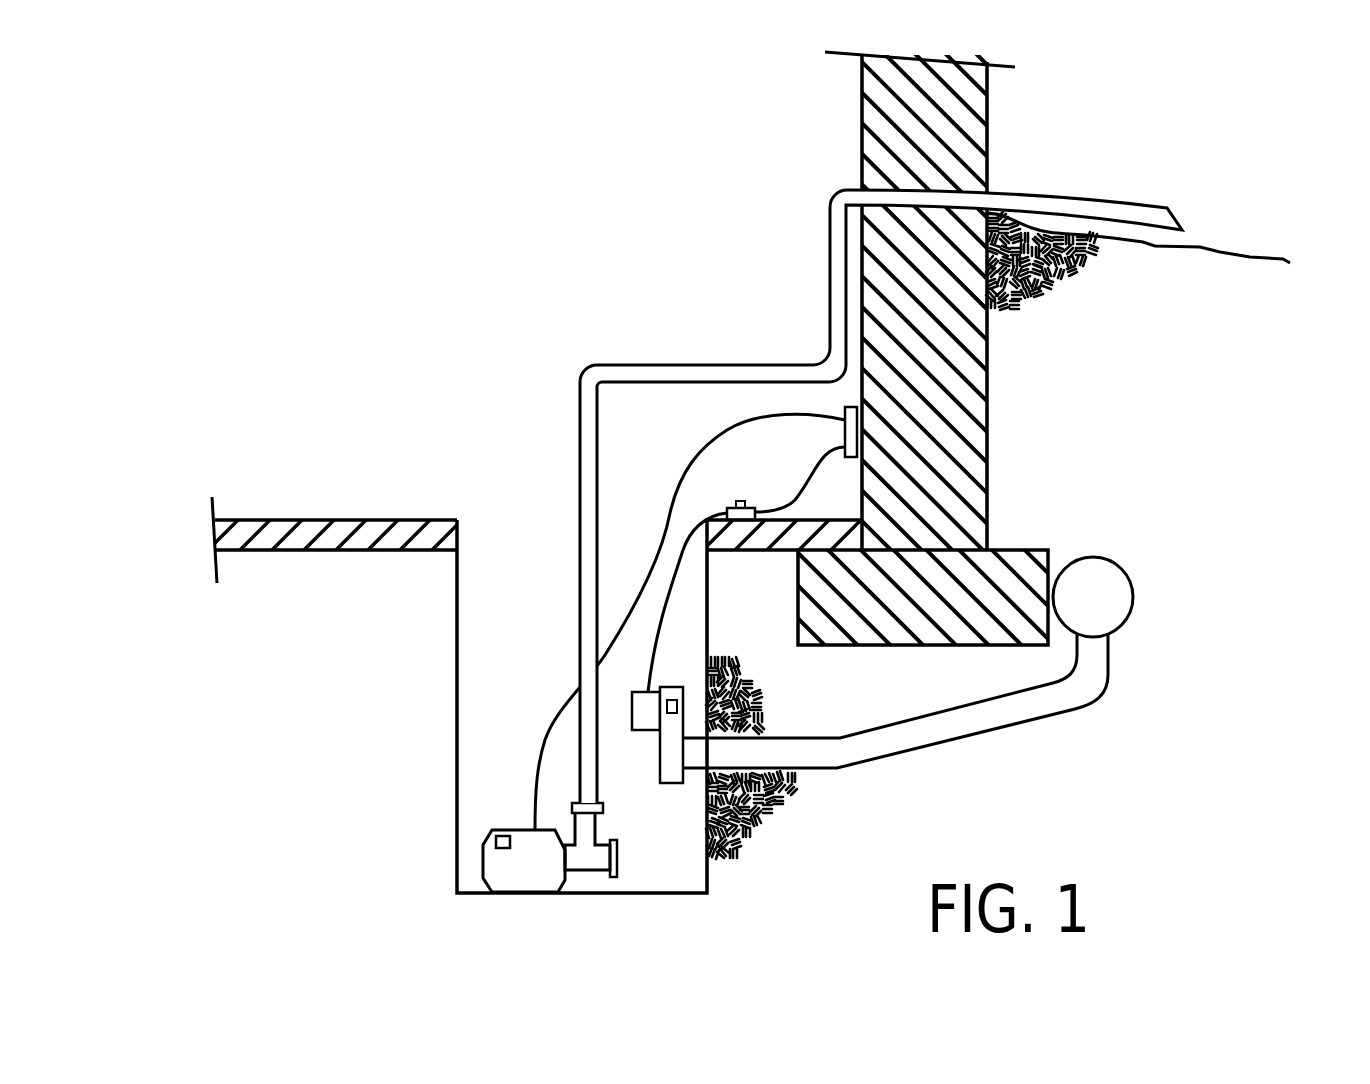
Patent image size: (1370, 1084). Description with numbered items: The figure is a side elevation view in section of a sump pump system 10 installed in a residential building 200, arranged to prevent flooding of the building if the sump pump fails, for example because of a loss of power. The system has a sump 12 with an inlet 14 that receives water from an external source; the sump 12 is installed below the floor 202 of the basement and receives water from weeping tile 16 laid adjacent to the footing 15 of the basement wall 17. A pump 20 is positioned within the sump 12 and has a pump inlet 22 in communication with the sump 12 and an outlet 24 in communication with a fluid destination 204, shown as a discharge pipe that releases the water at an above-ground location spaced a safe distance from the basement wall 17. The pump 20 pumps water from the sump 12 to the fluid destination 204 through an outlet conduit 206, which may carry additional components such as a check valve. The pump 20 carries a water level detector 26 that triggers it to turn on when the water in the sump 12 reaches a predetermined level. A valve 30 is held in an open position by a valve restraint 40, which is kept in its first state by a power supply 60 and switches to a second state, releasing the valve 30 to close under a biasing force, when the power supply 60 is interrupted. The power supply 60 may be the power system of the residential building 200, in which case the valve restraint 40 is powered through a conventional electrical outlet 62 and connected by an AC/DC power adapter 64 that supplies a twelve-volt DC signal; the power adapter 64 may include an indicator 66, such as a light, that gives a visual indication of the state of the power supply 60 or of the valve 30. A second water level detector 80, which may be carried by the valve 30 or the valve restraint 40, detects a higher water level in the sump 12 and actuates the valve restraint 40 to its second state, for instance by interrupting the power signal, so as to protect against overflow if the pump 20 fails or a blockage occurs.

The sump pump system 10 is at (418, 318).
The sump 12 is at (452, 702).
The inlet 14 is at (693, 770).
The footing 15 is at (1025, 551).
The weeping tile 16 is at (1093, 580).
The basement wall 17 is at (988, 453).
The pump 20 is at (497, 878).
The pump inlet 22 is at (607, 868).
The outlet 24 is at (570, 812).
The water level detector 26 is at (496, 842).
The valve 30 is at (671, 783).
The valve restraint 40 is at (645, 720).
The power supply 60 is at (848, 406).
The electrical outlet 62 is at (848, 406).
The AC/DC power adapter 64 is at (752, 506).
The indicator 66 is at (740, 504).
The second water level detector 80 is at (678, 707).
The residential building 200 is at (965, 120).
The floor 202 is at (303, 546).
The fluid destination 204 is at (1252, 270).
The outlet conduit 206 is at (697, 367).